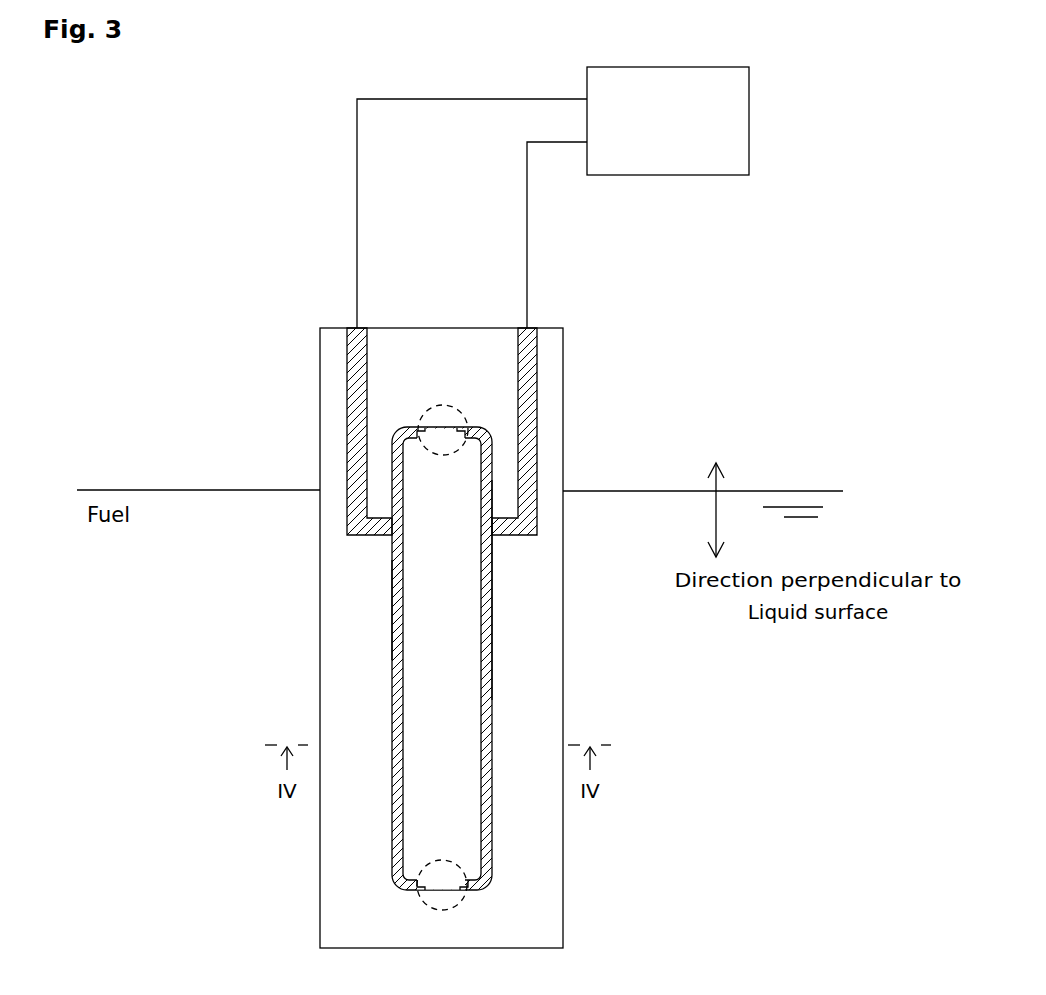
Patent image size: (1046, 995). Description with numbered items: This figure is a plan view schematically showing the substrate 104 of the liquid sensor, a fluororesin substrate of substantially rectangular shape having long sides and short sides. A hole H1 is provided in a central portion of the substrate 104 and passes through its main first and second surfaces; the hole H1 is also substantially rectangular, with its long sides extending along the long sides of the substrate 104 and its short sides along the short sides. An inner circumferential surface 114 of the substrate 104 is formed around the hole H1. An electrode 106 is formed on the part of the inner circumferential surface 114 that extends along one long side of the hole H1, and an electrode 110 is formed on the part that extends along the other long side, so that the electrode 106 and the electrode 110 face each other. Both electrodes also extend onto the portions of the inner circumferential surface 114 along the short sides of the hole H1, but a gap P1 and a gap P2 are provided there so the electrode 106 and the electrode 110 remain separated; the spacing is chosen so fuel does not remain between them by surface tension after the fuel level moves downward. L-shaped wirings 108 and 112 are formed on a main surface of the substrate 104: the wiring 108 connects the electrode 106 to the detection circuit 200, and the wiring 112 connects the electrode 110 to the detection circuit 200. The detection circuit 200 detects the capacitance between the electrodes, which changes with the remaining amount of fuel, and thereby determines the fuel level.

The detection circuit 200 is at (712, 67).
The substrate 104 is at (572, 645).
The electrode 106 is at (392, 688).
The wiring 108 is at (347, 443).
The electrode 110 is at (493, 580).
The wiring 112 is at (537, 447).
The inner circumferential surface 114 is at (395, 613).
The hole H1 is at (452, 802).
The gap P1 is at (443, 415).
The gap P2 is at (442, 900).